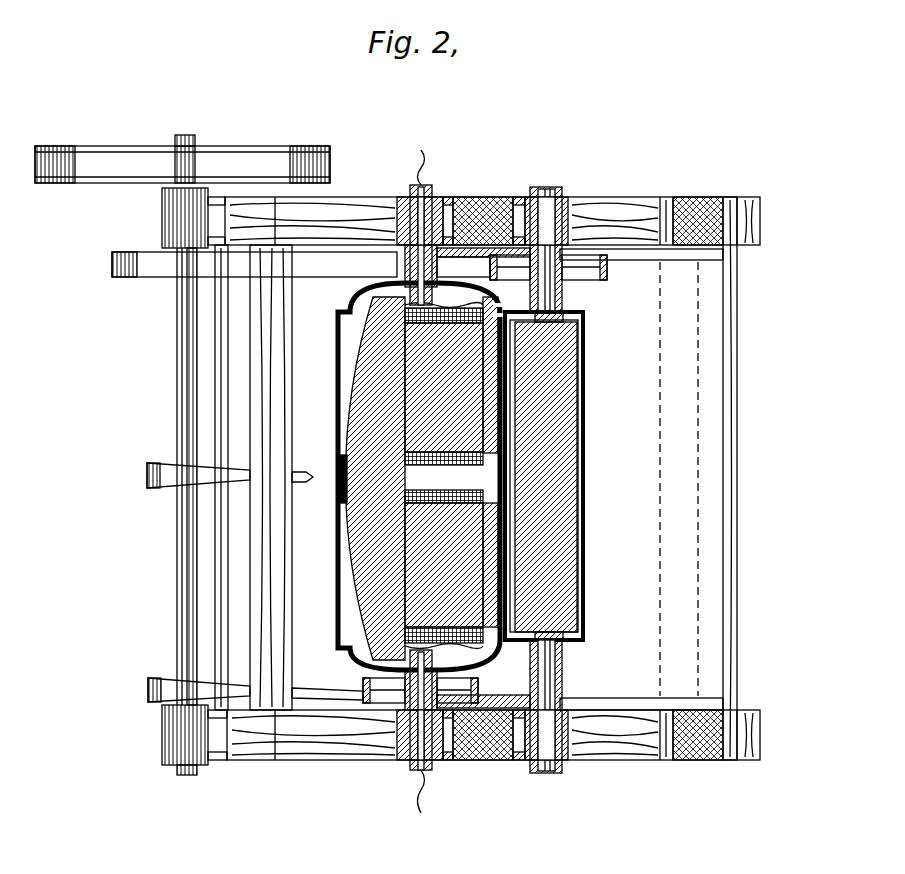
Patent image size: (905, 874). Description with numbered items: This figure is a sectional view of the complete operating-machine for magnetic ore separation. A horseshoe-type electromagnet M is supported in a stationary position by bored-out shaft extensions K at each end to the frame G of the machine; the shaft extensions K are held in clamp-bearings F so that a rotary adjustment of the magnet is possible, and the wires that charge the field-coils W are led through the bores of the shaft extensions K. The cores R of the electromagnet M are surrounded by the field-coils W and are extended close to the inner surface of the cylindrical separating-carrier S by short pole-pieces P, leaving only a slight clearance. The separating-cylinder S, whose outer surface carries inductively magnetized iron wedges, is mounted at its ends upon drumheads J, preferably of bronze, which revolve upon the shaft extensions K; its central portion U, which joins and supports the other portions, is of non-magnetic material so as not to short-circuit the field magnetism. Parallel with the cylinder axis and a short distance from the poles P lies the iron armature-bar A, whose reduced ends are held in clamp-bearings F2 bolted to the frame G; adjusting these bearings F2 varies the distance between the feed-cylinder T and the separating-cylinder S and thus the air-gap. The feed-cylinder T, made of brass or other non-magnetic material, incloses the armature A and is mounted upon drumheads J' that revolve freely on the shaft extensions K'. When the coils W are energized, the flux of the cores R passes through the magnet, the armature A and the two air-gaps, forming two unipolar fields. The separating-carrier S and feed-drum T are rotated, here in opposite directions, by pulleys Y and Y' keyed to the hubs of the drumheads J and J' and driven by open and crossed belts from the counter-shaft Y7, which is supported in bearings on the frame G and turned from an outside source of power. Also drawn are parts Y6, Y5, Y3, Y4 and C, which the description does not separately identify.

The gear wheel Y6 is at (132, 140).
The shaft Y5 is at (140, 252).
The arm Y3 is at (163, 463).
The arm Y4 is at (162, 680).
The counter-shaft Y7 is at (185, 777).
The pulley Y is at (385, 684).
The pulley Y' is at (565, 278).
The shaft extension K is at (445, 472).
The shaft extension K' is at (538, 485).
The clamp-bearing F is at (400, 197).
The clamp-bearing F2 is at (565, 197).
The frame G is at (700, 205).
The drumhead J is at (399, 477).
The drumhead J' is at (550, 482).
The pole-piece P is at (490, 312).
The separating-carrier S is at (338, 390).
The central portion of the cylinder U is at (340, 480).
The field-coil W is at (444, 397).
The core R is at (444, 557).
The armature A is at (565, 455).
The feed-cylinder T is at (583, 530).
The post C is at (737, 478).
The electromagnet M is at (362, 598).